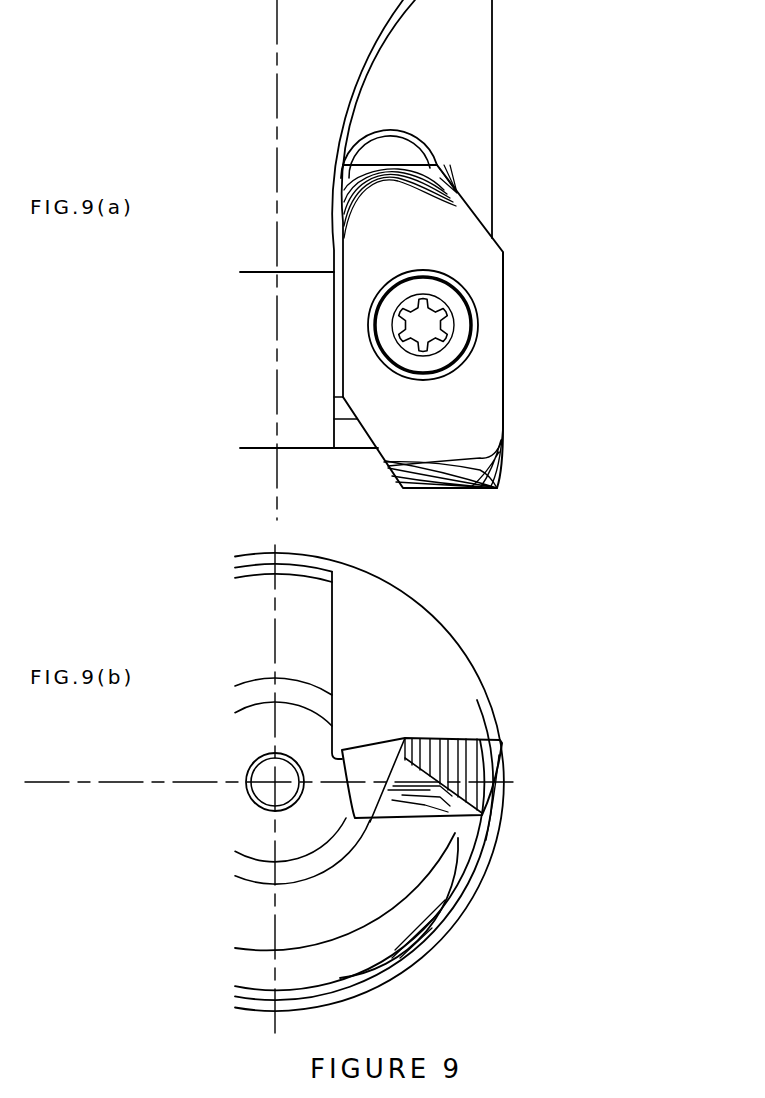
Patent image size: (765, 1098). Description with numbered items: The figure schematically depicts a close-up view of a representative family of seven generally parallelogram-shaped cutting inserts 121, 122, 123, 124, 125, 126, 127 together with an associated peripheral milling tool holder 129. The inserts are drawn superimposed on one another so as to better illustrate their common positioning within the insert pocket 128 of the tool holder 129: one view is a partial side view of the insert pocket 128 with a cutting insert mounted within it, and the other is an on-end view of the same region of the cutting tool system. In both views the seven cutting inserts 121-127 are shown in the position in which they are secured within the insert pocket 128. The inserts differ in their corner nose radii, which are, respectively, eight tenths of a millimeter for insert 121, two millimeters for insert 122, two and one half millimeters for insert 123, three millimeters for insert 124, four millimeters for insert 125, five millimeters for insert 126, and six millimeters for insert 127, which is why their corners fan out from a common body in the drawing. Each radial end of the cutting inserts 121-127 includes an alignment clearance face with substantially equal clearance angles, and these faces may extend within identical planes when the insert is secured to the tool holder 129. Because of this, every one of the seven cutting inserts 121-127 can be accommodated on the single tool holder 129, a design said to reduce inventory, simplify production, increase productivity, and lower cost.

In FIG. 9A, the cutting insert 121 is at (495, 487).
In FIG. 9B, the cutting insert 121 is at (498, 760).
In FIG. 9A, the cutting insert 122 is at (498, 485).
In FIG. 9B, the cutting insert 122 is at (480, 765).
In FIG. 9A, the cutting insert 123 is at (500, 468).
In FIG. 9B, the cutting insert 123 is at (465, 762).
In FIG. 9A, the cutting insert 124 is at (480, 470).
In FIG. 9B, the cutting insert 124 is at (493, 737).
In FIG. 9A, the cutting insert 125 is at (493, 460).
In FIG. 9B, the cutting insert 125 is at (453, 743).
In FIG. 9A, the cutting insert 126 is at (490, 445).
In FIG. 9B, the cutting insert 126 is at (423, 742).
In FIG. 9A, the cutting insert 127 is at (480, 458).
In FIG. 9B, the cutting insert 127 is at (410, 760).
In FIG. 9A, the insert pocket 128 is at (465, 148).
In FIG. 9A, the tool holder 129 is at (300, 322).